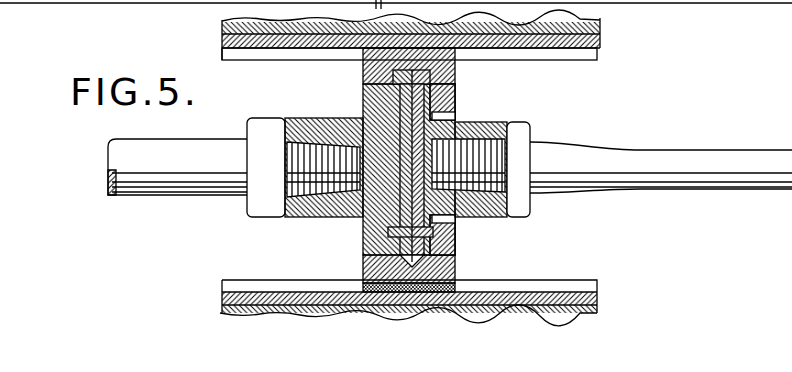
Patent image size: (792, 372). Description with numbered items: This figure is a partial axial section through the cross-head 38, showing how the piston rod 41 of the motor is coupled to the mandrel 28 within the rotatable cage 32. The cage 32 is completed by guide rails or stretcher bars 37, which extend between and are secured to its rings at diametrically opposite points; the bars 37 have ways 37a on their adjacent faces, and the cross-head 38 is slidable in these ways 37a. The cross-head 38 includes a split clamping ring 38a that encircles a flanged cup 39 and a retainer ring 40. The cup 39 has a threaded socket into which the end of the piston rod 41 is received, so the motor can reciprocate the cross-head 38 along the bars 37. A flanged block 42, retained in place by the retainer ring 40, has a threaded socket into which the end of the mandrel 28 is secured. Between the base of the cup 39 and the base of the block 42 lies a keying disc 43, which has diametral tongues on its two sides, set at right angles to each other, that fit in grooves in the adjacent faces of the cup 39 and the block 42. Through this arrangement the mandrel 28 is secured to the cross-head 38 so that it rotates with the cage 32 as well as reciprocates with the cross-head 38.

The mandrel 28 is at (680, 150).
The cage 32 is at (220, 33).
The guide rails or stretcher bars 37 is at (287, 32).
The ways 37a is at (597, 40).
The cross-head 38 is at (360, 102).
The split clamping ring 38a is at (368, 68).
The flanged cup 39 is at (360, 205).
The retainer ring 40 is at (456, 105).
The piston rod 41 is at (190, 186).
The flanged block 42 is at (468, 210).
The keying disc 43 is at (400, 222).